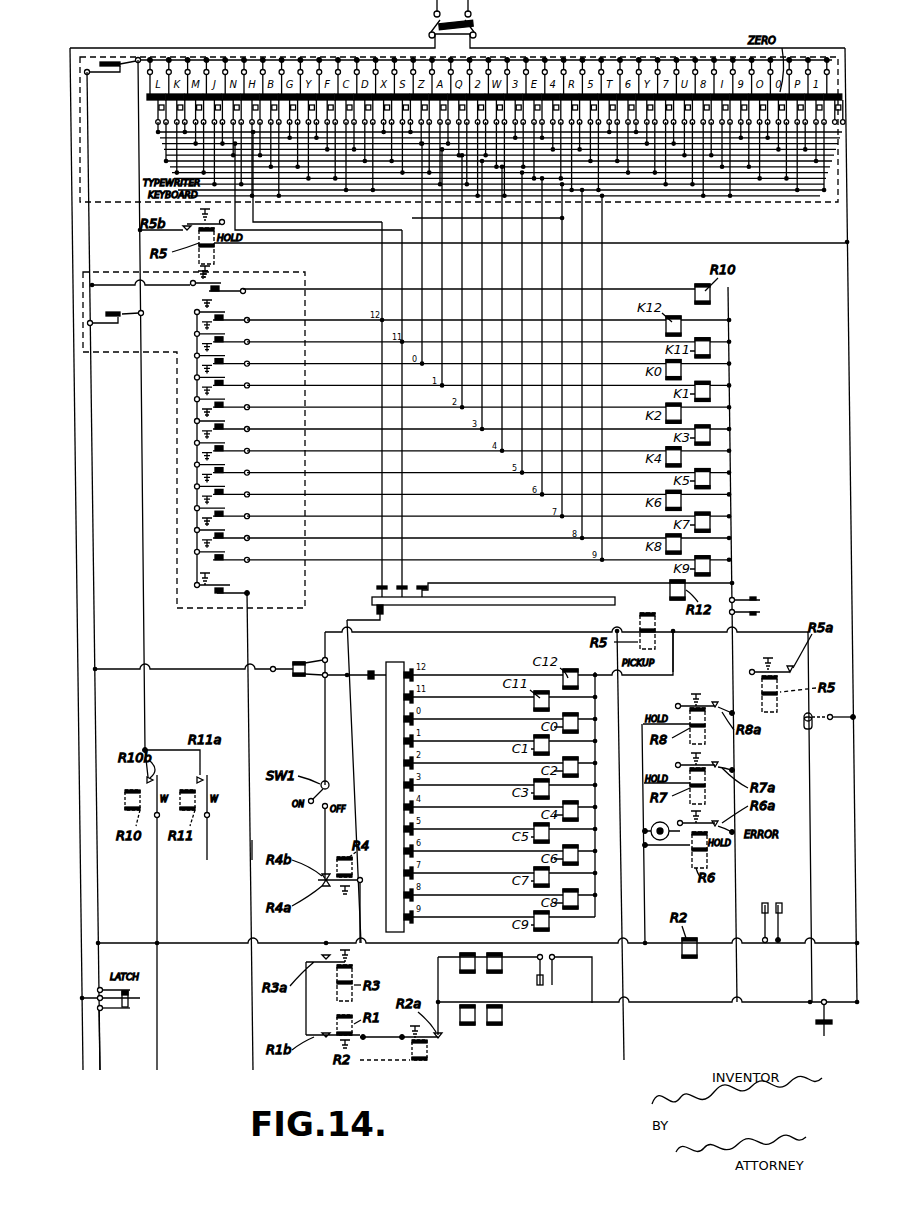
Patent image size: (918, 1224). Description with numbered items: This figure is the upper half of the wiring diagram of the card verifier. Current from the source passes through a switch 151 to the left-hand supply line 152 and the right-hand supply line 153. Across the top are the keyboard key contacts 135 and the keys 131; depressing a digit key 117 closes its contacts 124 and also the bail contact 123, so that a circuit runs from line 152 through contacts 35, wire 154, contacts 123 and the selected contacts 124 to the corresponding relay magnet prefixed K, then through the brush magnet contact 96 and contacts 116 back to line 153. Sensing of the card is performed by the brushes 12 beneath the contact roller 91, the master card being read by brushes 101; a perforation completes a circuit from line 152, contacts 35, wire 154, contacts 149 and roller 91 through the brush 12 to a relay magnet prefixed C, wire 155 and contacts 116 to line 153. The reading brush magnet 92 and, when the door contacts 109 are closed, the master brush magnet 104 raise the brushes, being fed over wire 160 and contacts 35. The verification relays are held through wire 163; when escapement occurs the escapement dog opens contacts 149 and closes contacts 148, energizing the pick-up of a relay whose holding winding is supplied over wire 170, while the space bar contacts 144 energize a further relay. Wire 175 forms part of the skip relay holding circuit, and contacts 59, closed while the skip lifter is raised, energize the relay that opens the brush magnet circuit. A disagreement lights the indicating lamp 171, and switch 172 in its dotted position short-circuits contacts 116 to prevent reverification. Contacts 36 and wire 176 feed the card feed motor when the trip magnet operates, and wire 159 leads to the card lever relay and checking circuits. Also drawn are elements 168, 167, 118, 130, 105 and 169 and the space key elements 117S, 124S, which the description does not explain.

The key contacts 135 is at (194, 92).
The switch 151 is at (478, 28).
The space bar contacts 144 is at (102, 73).
The keys 131 is at (190, 126).
The conductor 168 is at (293, 228).
The conductor 167 is at (472, 219).
The wire 170 is at (660, 243).
The no-X key contact spring 118 is at (208, 278).
The no-X key switch 130 is at (226, 295).
The bail contact 123 is at (120, 324).
The key 117 is at (195, 334).
The key contacts 124 is at (222, 373).
The line 152 is at (73, 352).
The wire 154 is at (93, 464).
The line 153 is at (847, 297).
The space key contact 117S is at (197, 577).
The space key switch 124S is at (218, 598).
The brushes 101 is at (418, 588).
The contact bar 105 is at (492, 602).
The brush magnet contact 96 is at (760, 610).
The wire 155 is at (705, 634).
The contacts 148 is at (292, 666).
The contacts 149 is at (272, 672).
The contact roller 91 is at (388, 715).
The brushes 12 is at (416, 768).
The indicating lamp 171 is at (661, 842).
The switch 172 is at (812, 730).
The contacts 59 is at (772, 903).
The wire 160 is at (220, 942).
The wire 163 is at (740, 1044).
The contacts 116 is at (842, 984).
The wire 175 is at (624, 1054).
The master brush magnet 104 is at (458, 963).
The door contacts 109 is at (548, 978).
The reading brush magnet 92 is at (505, 1020).
The contacts 35 is at (135, 993).
The contacts 36 is at (135, 1007).
The wire 176 is at (104, 1032).
The wire 159 is at (158, 1046).
The conductor 169 is at (252, 846).